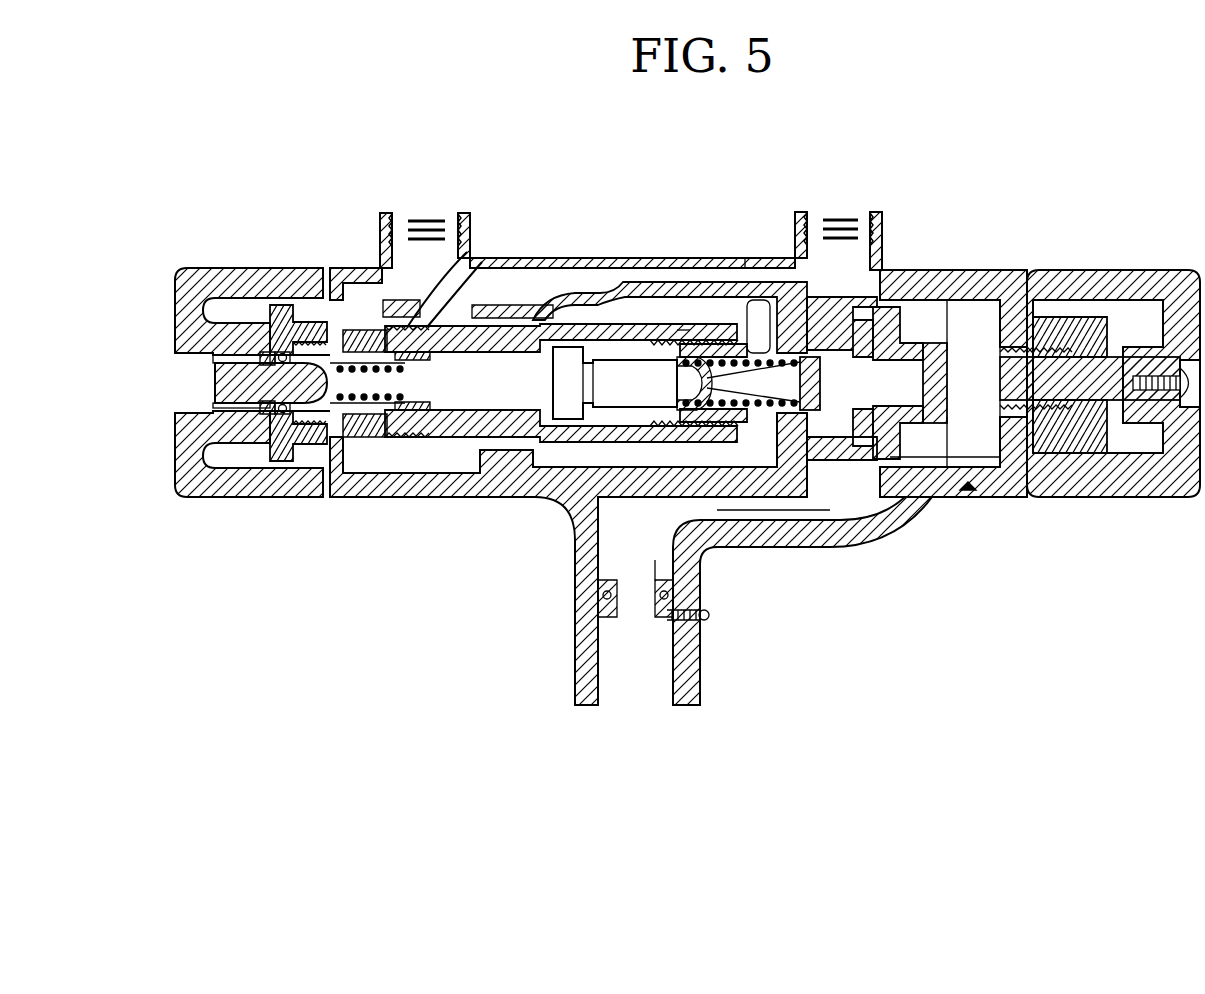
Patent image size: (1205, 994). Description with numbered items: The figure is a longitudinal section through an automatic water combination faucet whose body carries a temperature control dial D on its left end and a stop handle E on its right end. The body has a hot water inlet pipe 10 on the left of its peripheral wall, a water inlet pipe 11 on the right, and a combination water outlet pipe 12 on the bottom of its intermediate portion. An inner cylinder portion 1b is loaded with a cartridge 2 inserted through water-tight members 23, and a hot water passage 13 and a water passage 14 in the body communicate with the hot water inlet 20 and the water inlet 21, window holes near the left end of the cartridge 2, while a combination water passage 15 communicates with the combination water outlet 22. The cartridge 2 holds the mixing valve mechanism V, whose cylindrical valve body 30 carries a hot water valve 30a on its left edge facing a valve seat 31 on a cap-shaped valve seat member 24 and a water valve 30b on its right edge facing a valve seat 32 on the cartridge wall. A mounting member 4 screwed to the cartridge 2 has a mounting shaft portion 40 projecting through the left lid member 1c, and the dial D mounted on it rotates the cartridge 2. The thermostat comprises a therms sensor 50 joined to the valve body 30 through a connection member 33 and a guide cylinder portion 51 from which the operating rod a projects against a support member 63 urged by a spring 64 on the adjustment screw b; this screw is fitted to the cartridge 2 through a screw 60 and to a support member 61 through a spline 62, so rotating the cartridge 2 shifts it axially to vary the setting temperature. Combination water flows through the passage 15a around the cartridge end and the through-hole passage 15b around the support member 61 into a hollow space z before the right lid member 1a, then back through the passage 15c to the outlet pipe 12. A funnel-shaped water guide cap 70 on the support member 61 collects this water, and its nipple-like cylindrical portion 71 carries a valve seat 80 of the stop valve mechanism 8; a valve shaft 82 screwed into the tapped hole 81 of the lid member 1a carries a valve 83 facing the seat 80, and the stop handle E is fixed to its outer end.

The temperature control dial D is at (195, 265).
The stop handle E is at (1167, 495).
The mixing valve mechanism V is at (270, 347).
The mounting member 4 is at (225, 372).
The valve seat member 24 is at (212, 358).
The valve body 30 is at (405, 325).
The hot water valve 30a is at (338, 300).
The water valve 30b is at (440, 330).
The mounting shaft portion 40 is at (283, 407).
The connection member 33 is at (300, 462).
The hot water passage 13 is at (358, 282).
The hot water inlet pipe 10 is at (462, 258).
The water-tight members 23 is at (386, 300).
The water inlet pipe 11 is at (858, 300).
The lid member 1a is at (1005, 300).
The inner cylinder portion 1b is at (547, 305).
The lid member 1c is at (275, 472).
The combination water outlet pipe 12 is at (580, 617).
The combination water passage 15 is at (580, 563).
The passage 15a is at (575, 530).
The passage 15b is at (820, 460).
The passage 15c is at (750, 507).
The cartridge 2 is at (455, 442).
The hot water inlet 20 is at (395, 440).
The water inlet 21 is at (410, 432).
The combination water outlet 22 is at (570, 455).
The valve seat 31 is at (345, 405).
The valve seat 32 is at (445, 410).
The therms sensor 50 is at (495, 380).
The guide cylinder portion 51 is at (622, 378).
The screw 60 is at (700, 358).
The operating rod a is at (678, 335).
The adjustment screw b is at (745, 258).
The support member 61 is at (880, 305).
The water passage 14 is at (771, 258).
The spline 62 is at (786, 297).
The support member 63 is at (812, 360).
The spring 64 is at (832, 395).
The water guide cap 70 is at (888, 315).
The cylindrical portion 71 is at (935, 343).
The valve seat 80 is at (960, 305).
The tapped hole 81 is at (1045, 325).
The stop valve mechanism 8 is at (1015, 470).
The valve shaft 82 is at (1045, 430).
The valve 83 is at (927, 437).
The hollow space z is at (972, 497).